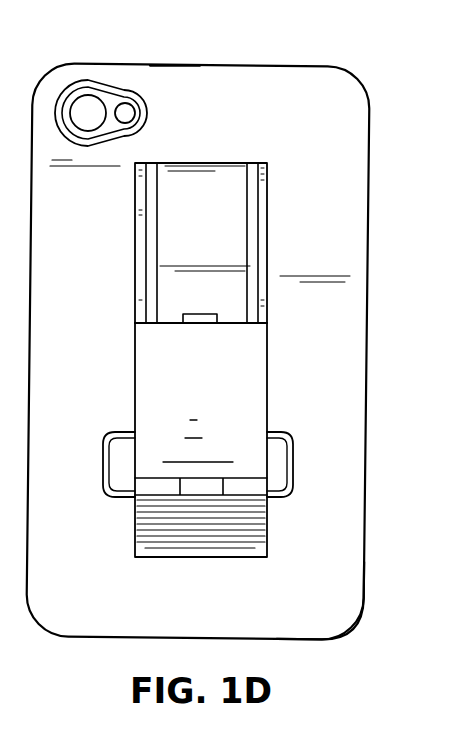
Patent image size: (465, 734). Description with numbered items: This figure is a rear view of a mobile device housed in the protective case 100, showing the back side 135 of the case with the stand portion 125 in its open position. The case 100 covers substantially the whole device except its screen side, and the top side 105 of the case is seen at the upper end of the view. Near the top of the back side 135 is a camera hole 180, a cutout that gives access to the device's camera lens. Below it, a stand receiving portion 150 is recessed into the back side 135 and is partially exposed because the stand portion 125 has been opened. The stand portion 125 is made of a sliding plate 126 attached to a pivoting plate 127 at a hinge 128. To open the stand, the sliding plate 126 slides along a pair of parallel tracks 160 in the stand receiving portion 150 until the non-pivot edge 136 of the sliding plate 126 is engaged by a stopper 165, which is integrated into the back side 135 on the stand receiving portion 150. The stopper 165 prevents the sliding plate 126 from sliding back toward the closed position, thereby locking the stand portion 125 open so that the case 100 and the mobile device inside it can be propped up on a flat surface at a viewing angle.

The protective case 100 is at (372, 108).
The top side 105 is at (175, 65).
The camera hole 180 is at (78, 88).
The stand receiving portion 150 is at (233, 238).
The parallel tracks 160 is at (264, 205).
The non-pivot edge 136 is at (168, 323).
The stopper 165 is at (217, 314).
The stand portion 125 is at (126, 398).
The sliding plate 126 is at (262, 409).
The hinge 128 is at (165, 492).
The pivoting plate 127 is at (150, 538).
The back side 135 is at (358, 583).